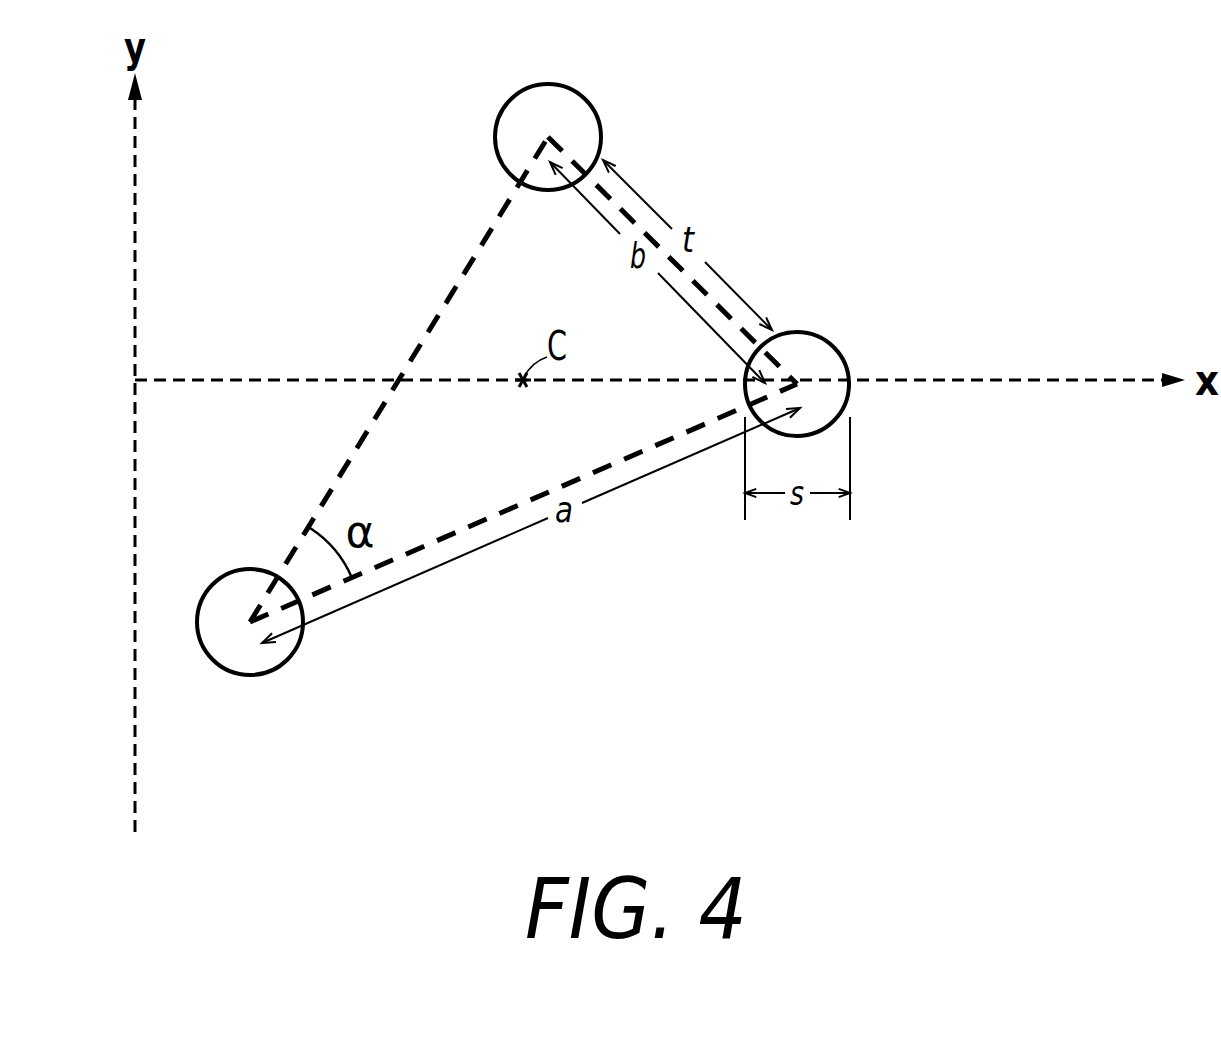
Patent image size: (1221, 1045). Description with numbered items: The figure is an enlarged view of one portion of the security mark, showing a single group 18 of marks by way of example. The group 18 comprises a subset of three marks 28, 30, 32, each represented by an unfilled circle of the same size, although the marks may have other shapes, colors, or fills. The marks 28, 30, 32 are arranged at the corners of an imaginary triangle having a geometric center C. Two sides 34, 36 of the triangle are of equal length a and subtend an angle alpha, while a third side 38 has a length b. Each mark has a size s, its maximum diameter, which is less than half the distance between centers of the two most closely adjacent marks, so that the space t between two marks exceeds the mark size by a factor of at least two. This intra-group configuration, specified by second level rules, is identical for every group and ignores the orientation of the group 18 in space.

The group of marks 18 is at (748, 183).
The mark 28 is at (300, 655).
The mark 30 is at (583, 96).
The mark 32 is at (832, 348).
The side 34 is at (405, 360).
The side 36 is at (545, 495).
The third side 38 is at (640, 195).